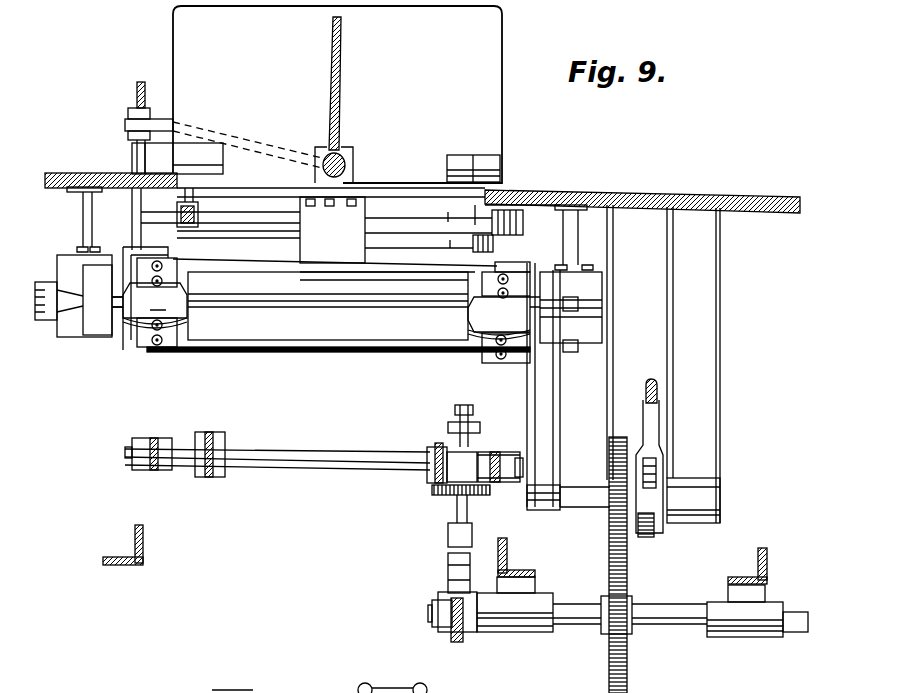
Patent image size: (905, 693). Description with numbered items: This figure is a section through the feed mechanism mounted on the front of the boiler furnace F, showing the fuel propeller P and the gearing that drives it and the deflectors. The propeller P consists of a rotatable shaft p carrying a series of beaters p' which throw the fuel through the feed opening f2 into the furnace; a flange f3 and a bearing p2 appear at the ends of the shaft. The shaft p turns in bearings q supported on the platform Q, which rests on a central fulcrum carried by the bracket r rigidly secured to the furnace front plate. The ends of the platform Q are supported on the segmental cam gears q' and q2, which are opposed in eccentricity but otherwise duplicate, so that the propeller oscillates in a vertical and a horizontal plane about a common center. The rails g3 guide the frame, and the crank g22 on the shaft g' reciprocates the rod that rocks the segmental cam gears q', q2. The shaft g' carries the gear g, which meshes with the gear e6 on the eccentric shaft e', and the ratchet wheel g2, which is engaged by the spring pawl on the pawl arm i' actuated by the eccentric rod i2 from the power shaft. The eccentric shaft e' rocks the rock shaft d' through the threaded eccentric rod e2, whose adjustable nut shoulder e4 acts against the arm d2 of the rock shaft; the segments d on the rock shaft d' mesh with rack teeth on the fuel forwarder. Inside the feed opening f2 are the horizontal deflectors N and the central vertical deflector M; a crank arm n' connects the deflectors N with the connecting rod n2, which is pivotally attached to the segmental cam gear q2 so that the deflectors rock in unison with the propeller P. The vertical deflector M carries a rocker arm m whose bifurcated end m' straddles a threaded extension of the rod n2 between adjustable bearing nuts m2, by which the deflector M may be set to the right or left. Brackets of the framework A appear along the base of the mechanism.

The horizontal deflectors N is at (337, 349).
The vertical deflector M is at (338, 100).
The boiler furnace F is at (422, 204).
The feed opening f2 is at (412, 233).
The flange f3 is at (634, 212).
The rocker arm m is at (247, 133).
The bifurcated end m' is at (119, 127).
The adjustable bearing nuts m2 is at (128, 112).
The crank arm n' is at (177, 158).
The connecting rod n2 is at (126, 219).
The bracket r is at (332, 230).
The platform Q is at (428, 276).
The fuel propeller P is at (331, 306).
The beaters p' is at (328, 309).
The propeller shaft p is at (104, 336).
The bearing block p2 is at (318, 303).
The bearings q is at (155, 302).
The segmental cam gear q' is at (499, 329).
The segmental cam gear q2 is at (130, 350).
The gear g is at (616, 548).
The shaft g' is at (679, 364).
The ratchet wheel g2 is at (653, 532).
The rails g3 is at (552, 357).
The crank g22 is at (537, 511).
The pawl arm i' is at (659, 466).
The eccentric rod i2 is at (656, 377).
The segments d is at (210, 461).
The rock shaft d' is at (324, 466).
The arm d2 is at (470, 456).
The eccentric shaft e' is at (618, 607).
The eccentric rod e2 is at (462, 425).
The adjustable shoulder e4 is at (443, 433).
The gear e6 is at (636, 664).
The framework A is at (435, 554).